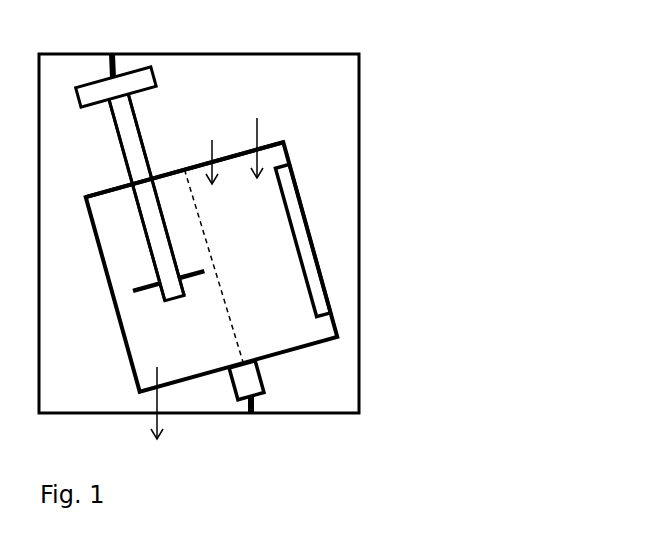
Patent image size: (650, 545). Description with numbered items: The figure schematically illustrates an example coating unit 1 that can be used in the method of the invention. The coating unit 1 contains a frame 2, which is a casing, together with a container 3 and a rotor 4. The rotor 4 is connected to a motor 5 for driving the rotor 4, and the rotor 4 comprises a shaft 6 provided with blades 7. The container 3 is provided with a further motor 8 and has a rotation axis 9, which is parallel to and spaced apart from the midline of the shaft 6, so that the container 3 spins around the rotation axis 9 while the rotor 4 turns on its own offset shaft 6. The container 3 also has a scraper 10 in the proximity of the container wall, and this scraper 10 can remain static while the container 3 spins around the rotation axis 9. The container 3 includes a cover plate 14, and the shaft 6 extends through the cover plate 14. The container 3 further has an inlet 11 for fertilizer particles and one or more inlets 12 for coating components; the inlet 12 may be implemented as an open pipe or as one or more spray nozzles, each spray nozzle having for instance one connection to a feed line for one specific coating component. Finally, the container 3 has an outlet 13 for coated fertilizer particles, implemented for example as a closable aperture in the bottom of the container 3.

The coating unit 1 is at (360, 123).
The frame 2 is at (360, 158).
The container 3 is at (130, 372).
The rotor 4 is at (122, 168).
The motor 5 is at (92, 105).
The shaft 6 is at (138, 138).
The blades 7 is at (198, 265).
The further motor 8 is at (254, 380).
The rotation axis 9 is at (232, 333).
The scraper 10 is at (290, 176).
The inlet for fertilizer particles 11 is at (213, 152).
The inlet for coating components 12 is at (258, 137).
The outlet for coated fertilizer particles 13 is at (140, 413).
The cover plate 14 is at (268, 140).